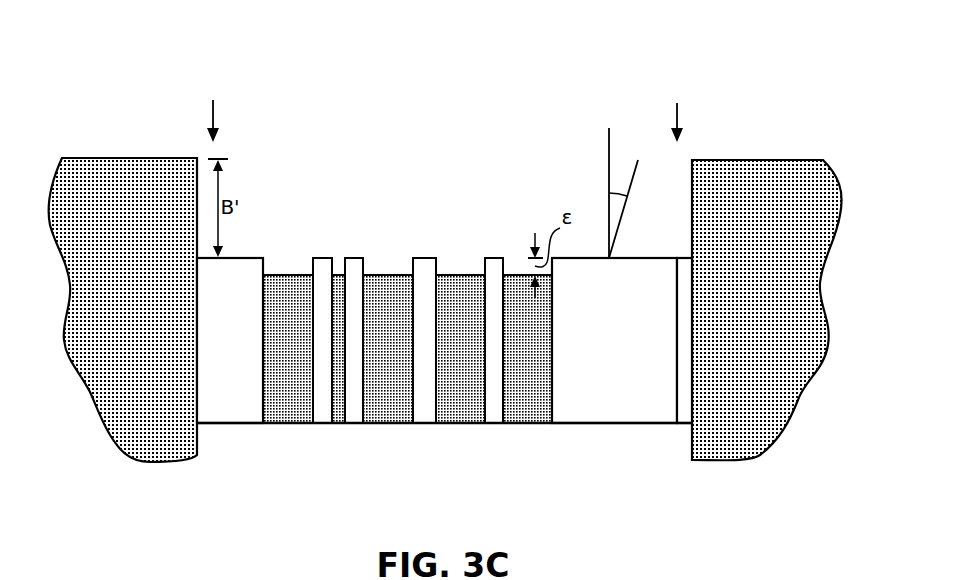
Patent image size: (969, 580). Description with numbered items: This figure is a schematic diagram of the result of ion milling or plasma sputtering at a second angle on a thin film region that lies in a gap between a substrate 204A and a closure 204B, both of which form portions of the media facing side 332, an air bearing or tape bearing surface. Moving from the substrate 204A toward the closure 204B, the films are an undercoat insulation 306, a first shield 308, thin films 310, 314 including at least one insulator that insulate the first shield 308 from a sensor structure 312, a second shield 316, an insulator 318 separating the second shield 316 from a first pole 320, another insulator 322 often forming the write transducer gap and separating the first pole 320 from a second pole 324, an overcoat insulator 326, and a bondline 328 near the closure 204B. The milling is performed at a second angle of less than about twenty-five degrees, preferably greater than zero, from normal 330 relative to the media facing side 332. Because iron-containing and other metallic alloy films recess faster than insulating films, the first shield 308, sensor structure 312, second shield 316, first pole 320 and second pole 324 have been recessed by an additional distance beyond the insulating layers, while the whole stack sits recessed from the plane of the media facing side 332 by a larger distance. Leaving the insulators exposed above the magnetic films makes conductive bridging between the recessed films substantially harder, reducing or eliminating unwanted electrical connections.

The substrate 204A is at (103, 221).
The closure 204B is at (745, 223).
The undercoat insulation 306 is at (211, 351).
The first shield 308 is at (290, 424).
The thin film 310 is at (315, 257).
The sensor structure 312 is at (343, 424).
The thin film 314 is at (351, 257).
The second shield 316 is at (393, 424).
The insulator 318 is at (422, 257).
The first pole 320 is at (470, 424).
The insulator 322 is at (488, 257).
The second pole 324 is at (541, 424).
The overcoat insulator 326 is at (595, 351).
The bondline 328 is at (685, 424).
The normal 330 is at (609, 157).
The media facing side 332 is at (445, 110).